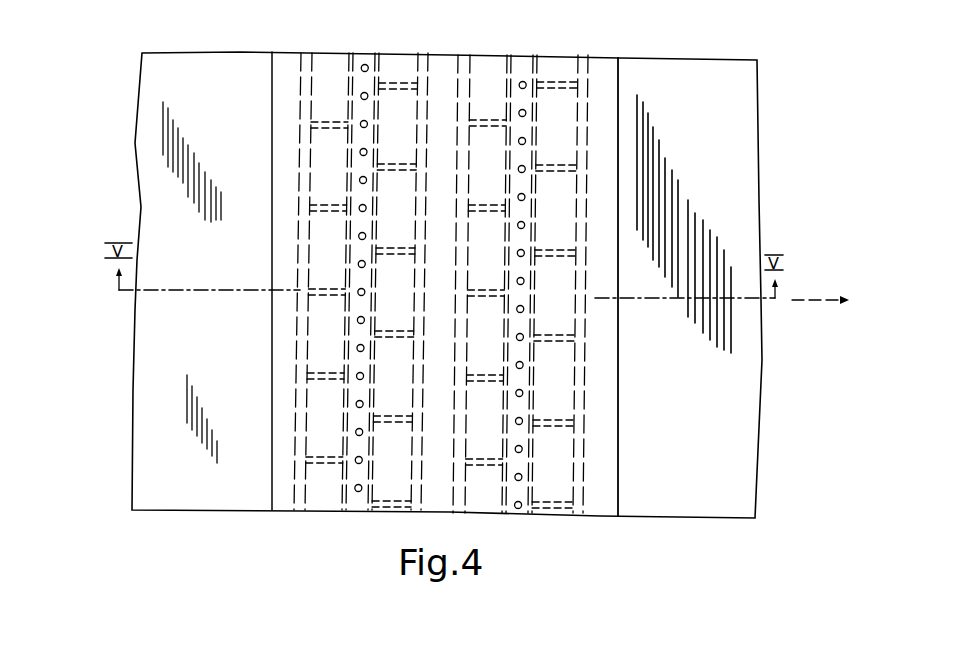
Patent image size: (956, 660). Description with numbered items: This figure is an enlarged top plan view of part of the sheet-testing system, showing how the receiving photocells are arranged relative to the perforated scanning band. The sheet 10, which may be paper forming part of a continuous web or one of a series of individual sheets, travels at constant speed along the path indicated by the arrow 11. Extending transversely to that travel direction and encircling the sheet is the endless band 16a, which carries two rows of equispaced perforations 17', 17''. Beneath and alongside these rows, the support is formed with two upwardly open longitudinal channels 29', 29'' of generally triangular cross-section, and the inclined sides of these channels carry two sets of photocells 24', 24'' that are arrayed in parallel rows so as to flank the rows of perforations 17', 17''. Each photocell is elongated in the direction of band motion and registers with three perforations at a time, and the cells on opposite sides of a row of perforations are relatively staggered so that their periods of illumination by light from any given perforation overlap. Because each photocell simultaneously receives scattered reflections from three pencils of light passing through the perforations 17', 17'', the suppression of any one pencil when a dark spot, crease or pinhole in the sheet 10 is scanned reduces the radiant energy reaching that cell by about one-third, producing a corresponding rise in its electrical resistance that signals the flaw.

The sheet 10 is at (155, 421).
The arrow 11 is at (815, 303).
The band 16a is at (605, 462).
The row of perforations 17' is at (343, 250).
The row of perforations 17'' is at (495, 259).
The set of photocells 24' is at (361, 327).
The set of photocells 24'' is at (521, 329).
The longitudinal channel 29' is at (318, 281).
The longitudinal channel 29'' is at (562, 284).